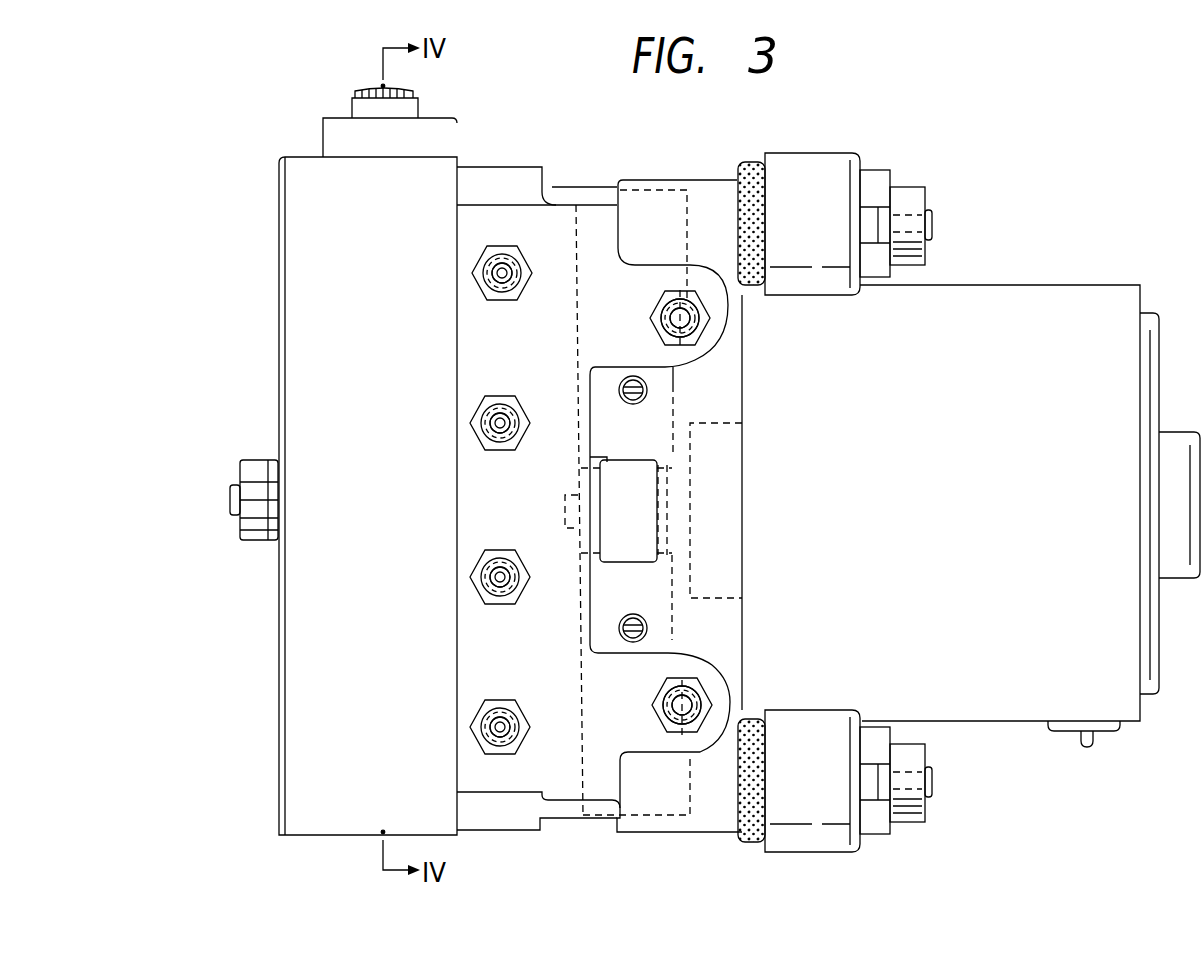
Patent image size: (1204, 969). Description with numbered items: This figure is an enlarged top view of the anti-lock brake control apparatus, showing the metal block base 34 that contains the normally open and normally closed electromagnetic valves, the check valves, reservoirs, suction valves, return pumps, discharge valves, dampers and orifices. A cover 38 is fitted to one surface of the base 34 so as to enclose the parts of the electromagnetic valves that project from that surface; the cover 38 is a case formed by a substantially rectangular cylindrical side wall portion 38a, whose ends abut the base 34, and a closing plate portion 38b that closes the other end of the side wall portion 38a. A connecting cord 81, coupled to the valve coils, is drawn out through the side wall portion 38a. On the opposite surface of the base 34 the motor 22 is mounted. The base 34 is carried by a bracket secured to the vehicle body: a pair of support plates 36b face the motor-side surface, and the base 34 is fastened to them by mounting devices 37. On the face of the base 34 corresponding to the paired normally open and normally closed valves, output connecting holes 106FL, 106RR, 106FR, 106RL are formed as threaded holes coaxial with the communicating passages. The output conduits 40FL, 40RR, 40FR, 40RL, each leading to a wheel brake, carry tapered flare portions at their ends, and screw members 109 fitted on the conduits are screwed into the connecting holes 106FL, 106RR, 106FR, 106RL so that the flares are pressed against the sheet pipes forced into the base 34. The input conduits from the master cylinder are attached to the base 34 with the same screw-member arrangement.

The motor 22 is at (970, 497).
The base 34 is at (565, 212).
The support plate 36b is at (873, 265).
The mounting device 37 is at (903, 166).
The cover 38 is at (270, 656).
The side wall portion 38a is at (315, 348).
The closing plate portion 38b is at (280, 252).
The output conduit 40FL is at (486, 252).
The output conduit 40RR is at (480, 415).
The output conduit 40FR is at (480, 572).
The output conduit 40RL is at (480, 722).
The connecting cord 81 is at (410, 93).
The output connecting hole 106FL is at (478, 286).
The output connecting hole 106RR is at (478, 452).
The output connecting hole 106FR is at (478, 602).
The output connecting hole 106RL is at (478, 748).
The screw member 109 is at (517, 262).